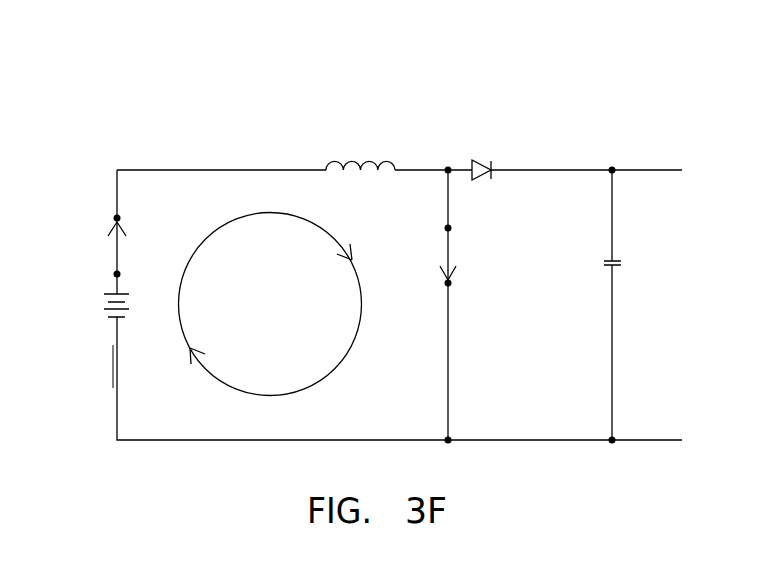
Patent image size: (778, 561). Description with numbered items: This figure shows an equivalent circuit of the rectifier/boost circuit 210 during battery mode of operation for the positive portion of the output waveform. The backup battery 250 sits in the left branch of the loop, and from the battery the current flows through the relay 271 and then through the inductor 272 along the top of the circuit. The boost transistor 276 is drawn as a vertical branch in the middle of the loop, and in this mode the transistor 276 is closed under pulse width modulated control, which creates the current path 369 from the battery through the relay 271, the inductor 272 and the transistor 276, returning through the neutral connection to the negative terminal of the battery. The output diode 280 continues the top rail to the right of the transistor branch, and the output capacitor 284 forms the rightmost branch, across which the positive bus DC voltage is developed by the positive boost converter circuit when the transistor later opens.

The rectifier/boost circuit 210 is at (582, 102).
The relay 271 is at (117, 252).
The backup battery 250 is at (105, 303).
The inductor 272 is at (351, 163).
The output diode 280 is at (481, 162).
The boost transistor 276 is at (448, 256).
The output capacitor 284 is at (616, 268).
The current path 369 is at (316, 224).